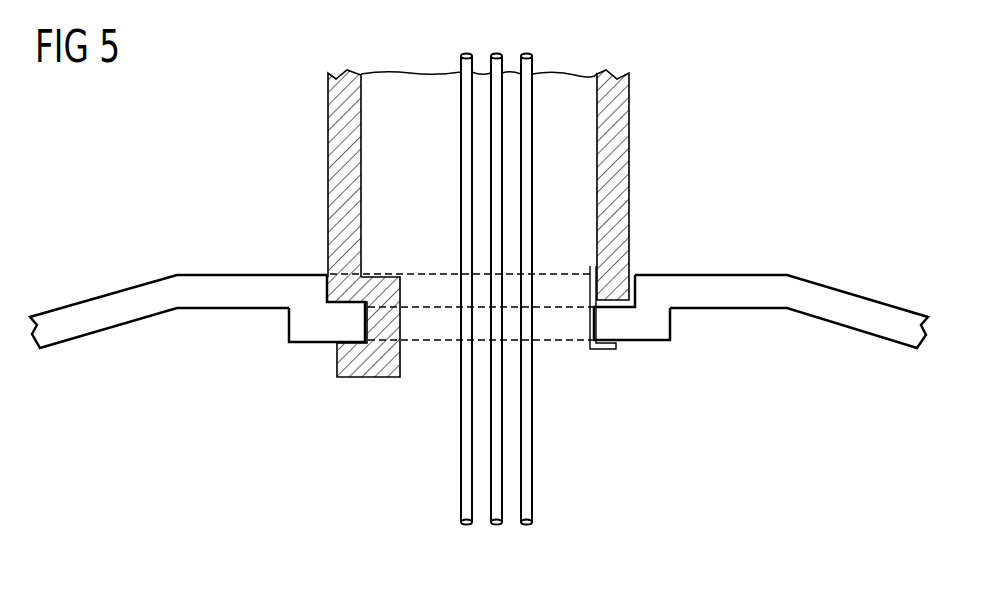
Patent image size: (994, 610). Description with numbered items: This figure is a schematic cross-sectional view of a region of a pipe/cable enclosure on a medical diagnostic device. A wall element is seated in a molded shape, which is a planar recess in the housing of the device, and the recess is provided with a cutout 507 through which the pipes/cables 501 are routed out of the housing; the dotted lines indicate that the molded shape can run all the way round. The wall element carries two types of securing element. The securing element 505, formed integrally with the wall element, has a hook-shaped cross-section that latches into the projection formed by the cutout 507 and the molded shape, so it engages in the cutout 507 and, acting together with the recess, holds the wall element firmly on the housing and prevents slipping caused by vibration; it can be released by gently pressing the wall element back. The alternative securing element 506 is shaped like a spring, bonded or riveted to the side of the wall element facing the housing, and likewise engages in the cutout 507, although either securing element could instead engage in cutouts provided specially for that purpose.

The pipes/cables 501 is at (532, 487).
The securing element 505 is at (370, 378).
The securing element 506 is at (597, 350).
The cutout 507 is at (445, 332).